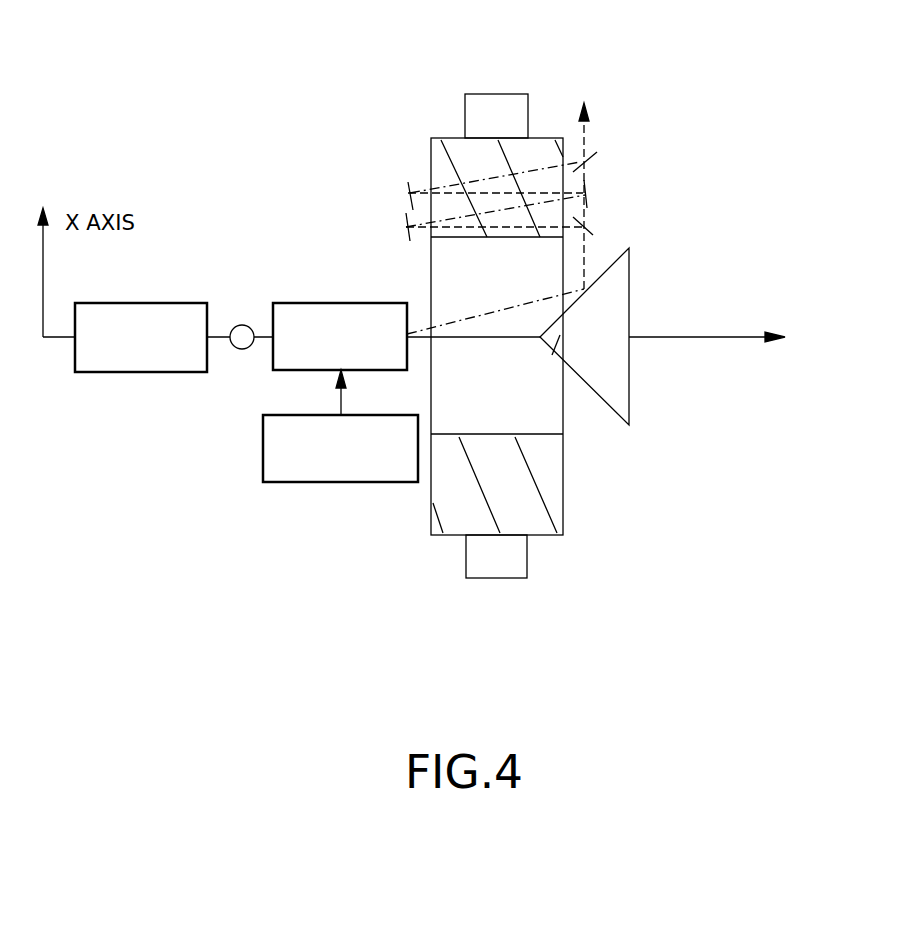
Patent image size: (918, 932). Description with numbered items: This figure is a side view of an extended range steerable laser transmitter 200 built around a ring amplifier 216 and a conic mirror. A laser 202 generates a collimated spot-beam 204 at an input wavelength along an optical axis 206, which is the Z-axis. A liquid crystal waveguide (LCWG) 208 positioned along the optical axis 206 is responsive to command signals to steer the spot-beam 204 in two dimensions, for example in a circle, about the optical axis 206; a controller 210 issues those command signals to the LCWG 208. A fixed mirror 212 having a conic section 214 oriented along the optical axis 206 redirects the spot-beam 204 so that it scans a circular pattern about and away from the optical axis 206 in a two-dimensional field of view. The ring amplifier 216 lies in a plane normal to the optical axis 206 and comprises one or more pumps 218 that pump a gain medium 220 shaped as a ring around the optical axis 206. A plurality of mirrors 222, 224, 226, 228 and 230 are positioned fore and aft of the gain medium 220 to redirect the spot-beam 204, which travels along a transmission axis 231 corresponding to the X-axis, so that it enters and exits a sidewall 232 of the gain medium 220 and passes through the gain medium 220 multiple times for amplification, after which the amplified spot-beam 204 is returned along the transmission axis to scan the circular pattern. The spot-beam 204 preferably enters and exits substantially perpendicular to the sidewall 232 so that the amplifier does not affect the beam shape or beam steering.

The extended range steerable laser transmitter 200 is at (262, 97).
The laser 202 is at (190, 303).
The collimated spot-beam 204 is at (243, 349).
The optical axis 206 is at (740, 335).
The liquid crystal waveguide (LCWG) 208 is at (338, 303).
The controller 210 is at (337, 482).
The fixed mirror 212 is at (630, 387).
The conic section 214 is at (555, 352).
The ring amplifier 216 is at (658, 474).
The pump 218 is at (467, 550).
The gain medium 220 is at (563, 500).
The mirror 222 is at (593, 235).
The mirror 224 is at (407, 225).
The mirror 226 is at (588, 197).
The mirror 228 is at (407, 183).
The mirror 230 is at (597, 150).
The transmission axis 231 is at (585, 262).
The sidewall 232 is at (565, 177).